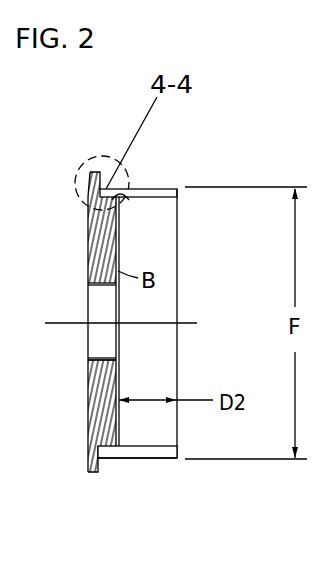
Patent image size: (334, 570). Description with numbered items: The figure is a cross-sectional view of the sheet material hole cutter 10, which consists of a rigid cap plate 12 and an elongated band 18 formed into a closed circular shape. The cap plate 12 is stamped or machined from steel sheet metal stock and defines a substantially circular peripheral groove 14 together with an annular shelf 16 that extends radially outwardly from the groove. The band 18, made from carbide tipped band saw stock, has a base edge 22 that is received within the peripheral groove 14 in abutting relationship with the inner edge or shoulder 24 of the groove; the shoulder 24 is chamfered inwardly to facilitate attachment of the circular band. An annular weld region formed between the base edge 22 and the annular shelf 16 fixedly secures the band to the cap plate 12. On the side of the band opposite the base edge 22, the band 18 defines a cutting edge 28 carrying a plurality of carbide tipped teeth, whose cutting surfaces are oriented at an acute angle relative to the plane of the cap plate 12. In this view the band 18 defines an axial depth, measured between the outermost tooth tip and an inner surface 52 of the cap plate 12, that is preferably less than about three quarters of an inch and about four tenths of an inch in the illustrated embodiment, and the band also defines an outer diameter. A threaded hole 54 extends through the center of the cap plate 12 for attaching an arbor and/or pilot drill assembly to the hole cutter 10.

The sheet material hole cutter 10 is at (173, 161).
The cap plate 12 is at (88, 257).
The peripheral groove 14 is at (104, 458).
The annular shelf 16 is at (113, 174).
The elongated band 18 is at (138, 459).
The base edge 22 is at (110, 188).
The shoulder 24 is at (127, 202).
The cutting edge 28 is at (173, 460).
The inner surface 52 is at (118, 387).
The threaded hole 54 is at (102, 358).